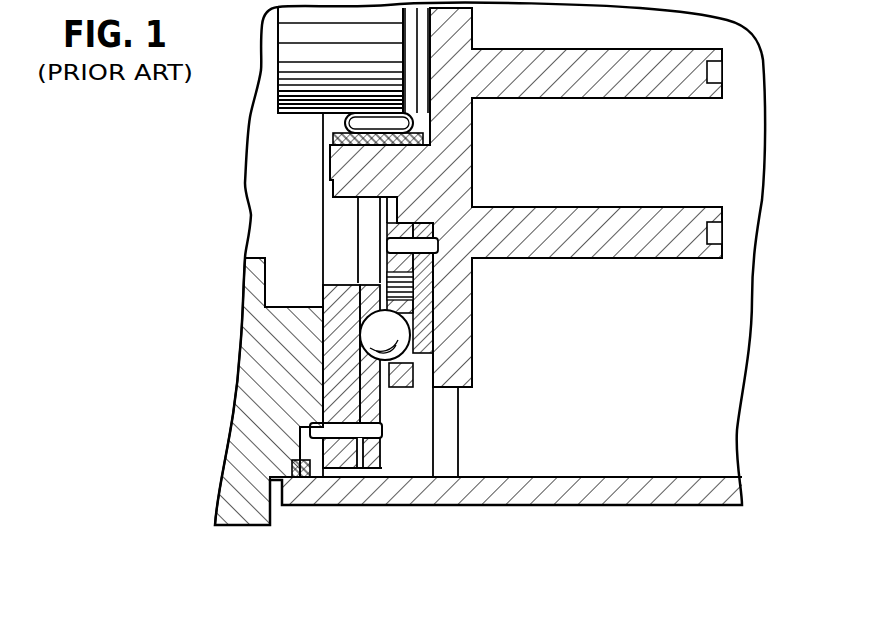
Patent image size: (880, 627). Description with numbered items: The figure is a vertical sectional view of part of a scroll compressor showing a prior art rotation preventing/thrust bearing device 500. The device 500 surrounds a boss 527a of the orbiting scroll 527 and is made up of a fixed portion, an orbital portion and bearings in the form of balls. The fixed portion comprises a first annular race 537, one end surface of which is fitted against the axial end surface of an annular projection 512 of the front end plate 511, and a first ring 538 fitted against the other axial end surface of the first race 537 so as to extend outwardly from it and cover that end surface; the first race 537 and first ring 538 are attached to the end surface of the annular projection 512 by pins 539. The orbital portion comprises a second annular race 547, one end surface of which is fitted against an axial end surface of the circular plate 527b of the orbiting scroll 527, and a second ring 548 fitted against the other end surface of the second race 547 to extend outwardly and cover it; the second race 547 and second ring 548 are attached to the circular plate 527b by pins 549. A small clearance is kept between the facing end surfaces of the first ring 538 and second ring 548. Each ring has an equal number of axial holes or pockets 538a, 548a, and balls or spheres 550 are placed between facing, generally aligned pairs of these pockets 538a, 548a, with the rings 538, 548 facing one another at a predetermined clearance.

The rotation preventing/thrust bearing device 500 is at (400, 400).
The front end plate 511 is at (233, 513).
The annular projection 512 is at (314, 448).
The orbiting scroll 527 is at (492, 277).
The boss 527a is at (333, 175).
The circular plate 527b is at (475, 354).
The first annular race 537 is at (335, 345).
The first ring 538 is at (370, 463).
The holes or pockets 538a is at (323, 388).
The pins 539 is at (305, 430).
The second annular race 547 is at (413, 336).
The second ring 548 is at (420, 387).
The holes or pockets 548a is at (433, 293).
The pins 549 is at (475, 197).
The balls or spheres 550 is at (362, 318).